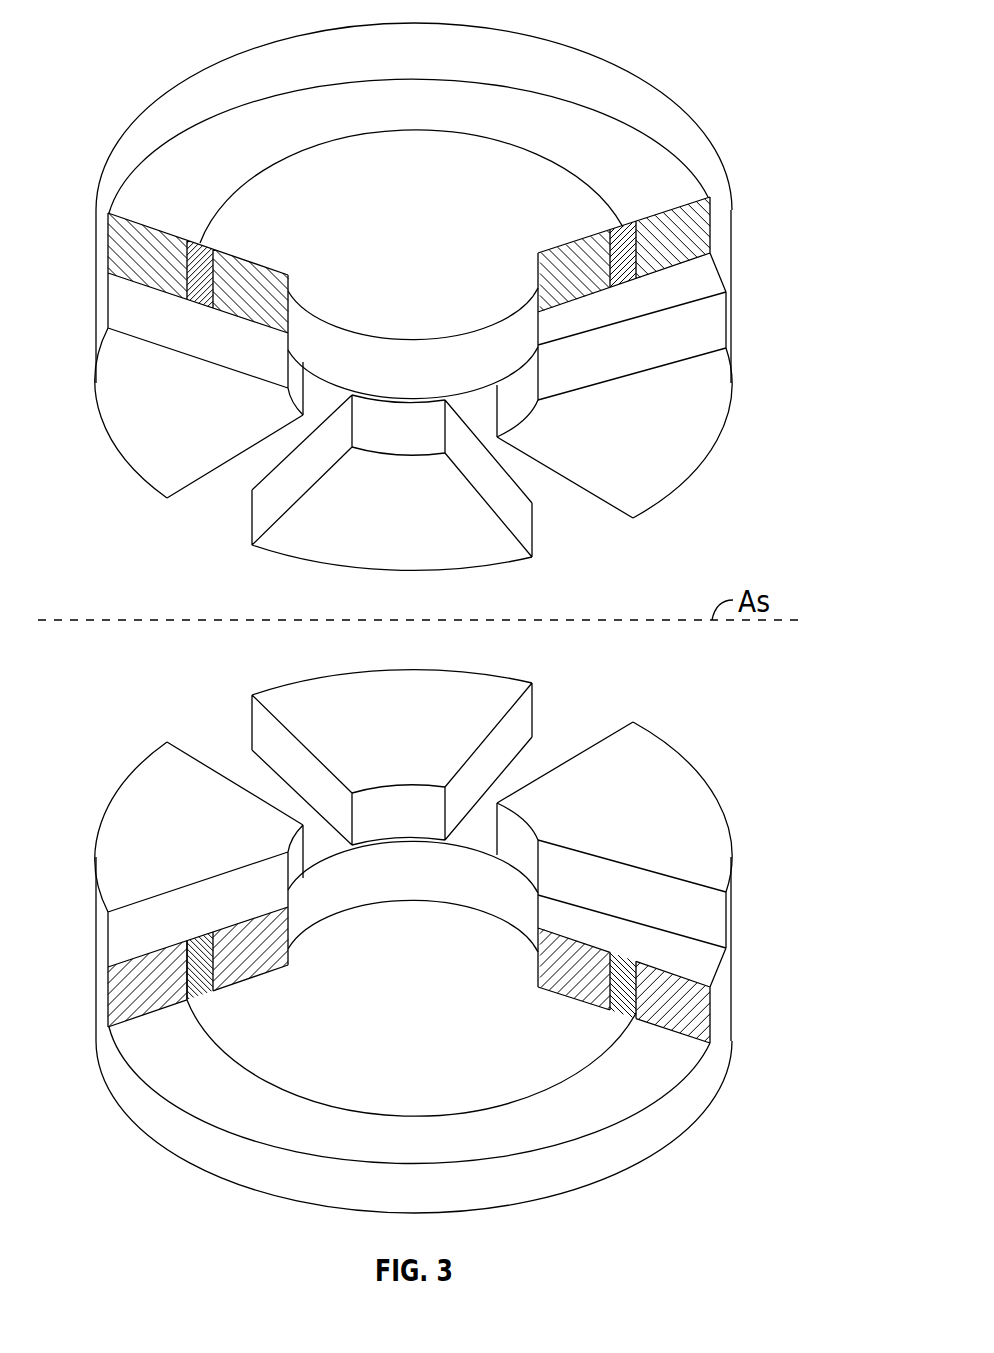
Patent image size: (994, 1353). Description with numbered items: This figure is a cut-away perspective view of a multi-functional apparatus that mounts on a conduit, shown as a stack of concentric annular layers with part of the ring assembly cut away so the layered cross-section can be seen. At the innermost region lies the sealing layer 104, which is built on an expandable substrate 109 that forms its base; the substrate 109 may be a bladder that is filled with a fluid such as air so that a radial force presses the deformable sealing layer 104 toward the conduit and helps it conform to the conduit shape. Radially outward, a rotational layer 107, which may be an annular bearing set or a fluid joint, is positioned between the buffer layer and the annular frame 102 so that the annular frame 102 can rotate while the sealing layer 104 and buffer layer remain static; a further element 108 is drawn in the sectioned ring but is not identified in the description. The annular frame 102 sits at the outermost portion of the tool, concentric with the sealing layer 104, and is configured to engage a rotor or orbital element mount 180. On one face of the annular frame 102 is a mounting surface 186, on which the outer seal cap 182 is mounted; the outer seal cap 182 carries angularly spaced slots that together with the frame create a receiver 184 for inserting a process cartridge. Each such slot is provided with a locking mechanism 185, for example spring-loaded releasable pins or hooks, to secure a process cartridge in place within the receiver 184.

The annular frame 102 is at (700, 1022).
The sealing layer 104 is at (268, 938).
The rotational layer 107 is at (205, 988).
The spacer 108 is at (610, 968).
The expandable substrate 109 is at (262, 952).
The orbital element mount 180 is at (706, 1067).
The outer seal cap 182 is at (736, 898).
The receiver 184 is at (233, 749).
The locking mechanism 185 is at (520, 716).
The mounting surface 186 is at (706, 952).